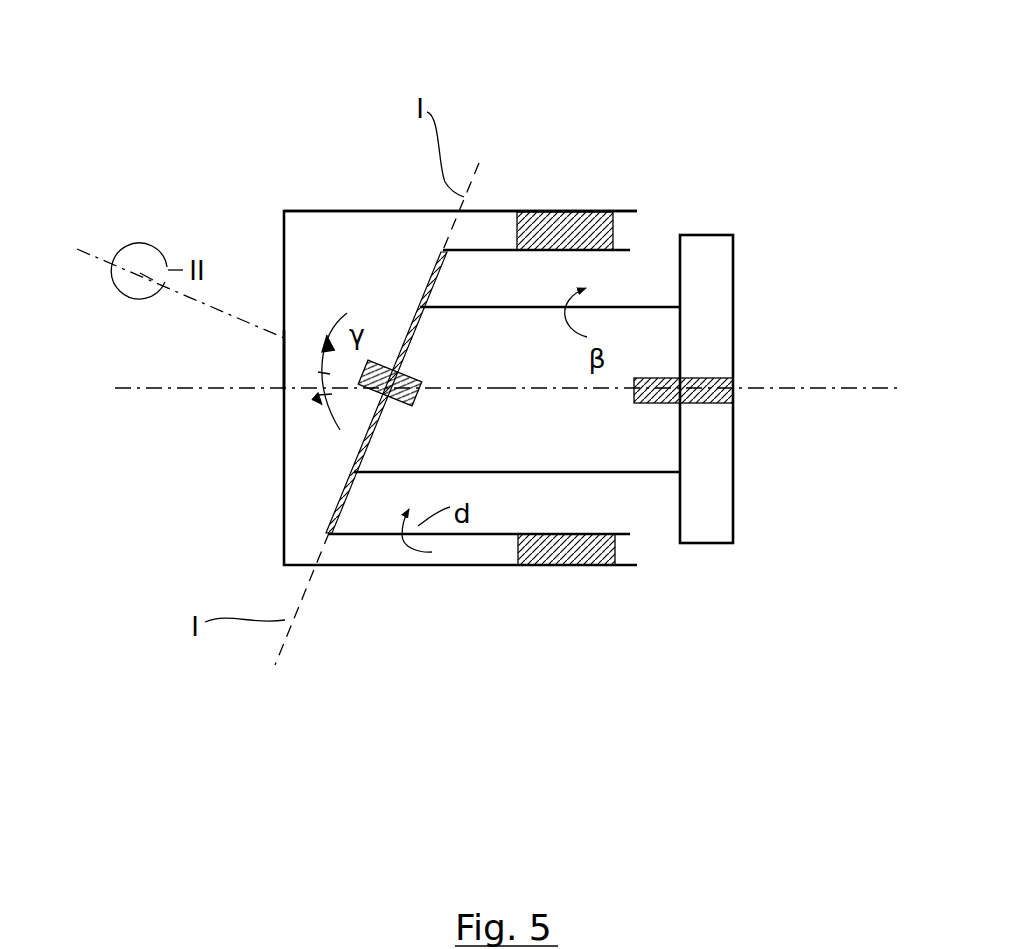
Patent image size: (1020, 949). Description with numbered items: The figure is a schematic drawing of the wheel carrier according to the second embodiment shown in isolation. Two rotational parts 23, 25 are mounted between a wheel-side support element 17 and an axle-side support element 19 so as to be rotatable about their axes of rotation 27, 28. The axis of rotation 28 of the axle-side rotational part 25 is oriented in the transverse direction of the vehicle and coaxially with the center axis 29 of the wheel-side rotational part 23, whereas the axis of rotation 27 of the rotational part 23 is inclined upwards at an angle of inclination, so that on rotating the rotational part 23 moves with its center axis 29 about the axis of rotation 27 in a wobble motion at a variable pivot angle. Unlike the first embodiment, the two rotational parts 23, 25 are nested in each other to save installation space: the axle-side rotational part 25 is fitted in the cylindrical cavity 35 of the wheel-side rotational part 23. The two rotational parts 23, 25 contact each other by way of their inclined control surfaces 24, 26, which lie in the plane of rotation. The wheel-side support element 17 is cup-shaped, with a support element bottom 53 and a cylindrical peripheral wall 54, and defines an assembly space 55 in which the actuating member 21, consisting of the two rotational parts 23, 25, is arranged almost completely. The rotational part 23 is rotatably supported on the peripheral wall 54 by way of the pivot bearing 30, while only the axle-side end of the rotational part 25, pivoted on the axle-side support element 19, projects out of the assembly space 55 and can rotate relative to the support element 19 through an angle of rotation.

The wheel-side support element 17 is at (273, 262).
The axle-side support element 19 is at (734, 289).
The actuating member 21 is at (453, 545).
The wheel-side rotational part 23 is at (538, 282).
The inclined control surface 24 is at (430, 267).
The axle-side rotational part 25 is at (648, 474).
The inclined control surface 26 is at (420, 323).
The axis of rotation 27 is at (124, 266).
The axis of rotation 28 is at (770, 390).
The center axis 29 is at (266, 389).
The pivot bearing 30 is at (593, 209).
The cylindrical cavity 35 is at (540, 210).
The support element bottom 53 is at (285, 357).
The peripheral wall 54 is at (567, 566).
The assembly space 55 is at (352, 293).